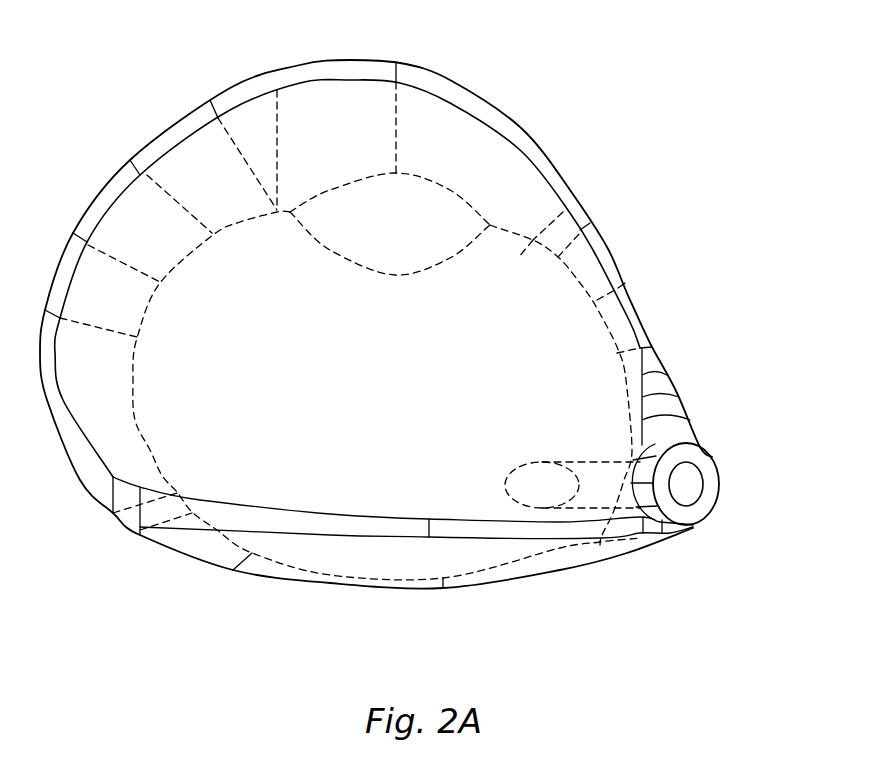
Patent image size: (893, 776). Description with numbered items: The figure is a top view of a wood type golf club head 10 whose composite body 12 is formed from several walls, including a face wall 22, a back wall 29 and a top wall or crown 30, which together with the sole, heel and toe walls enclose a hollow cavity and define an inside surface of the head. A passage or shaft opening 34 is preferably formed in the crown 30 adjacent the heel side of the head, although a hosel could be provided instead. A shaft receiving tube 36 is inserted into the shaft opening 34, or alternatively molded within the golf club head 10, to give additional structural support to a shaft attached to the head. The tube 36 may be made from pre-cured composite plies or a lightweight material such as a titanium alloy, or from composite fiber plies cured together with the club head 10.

The golf club head 10 is at (716, 269).
The composite body 12 is at (648, 545).
The face wall 22 is at (360, 567).
The back wall 29 is at (448, 80).
The crown 30 is at (560, 215).
The shaft opening 34 is at (700, 472).
The shaft receiving tube 36 is at (600, 545).